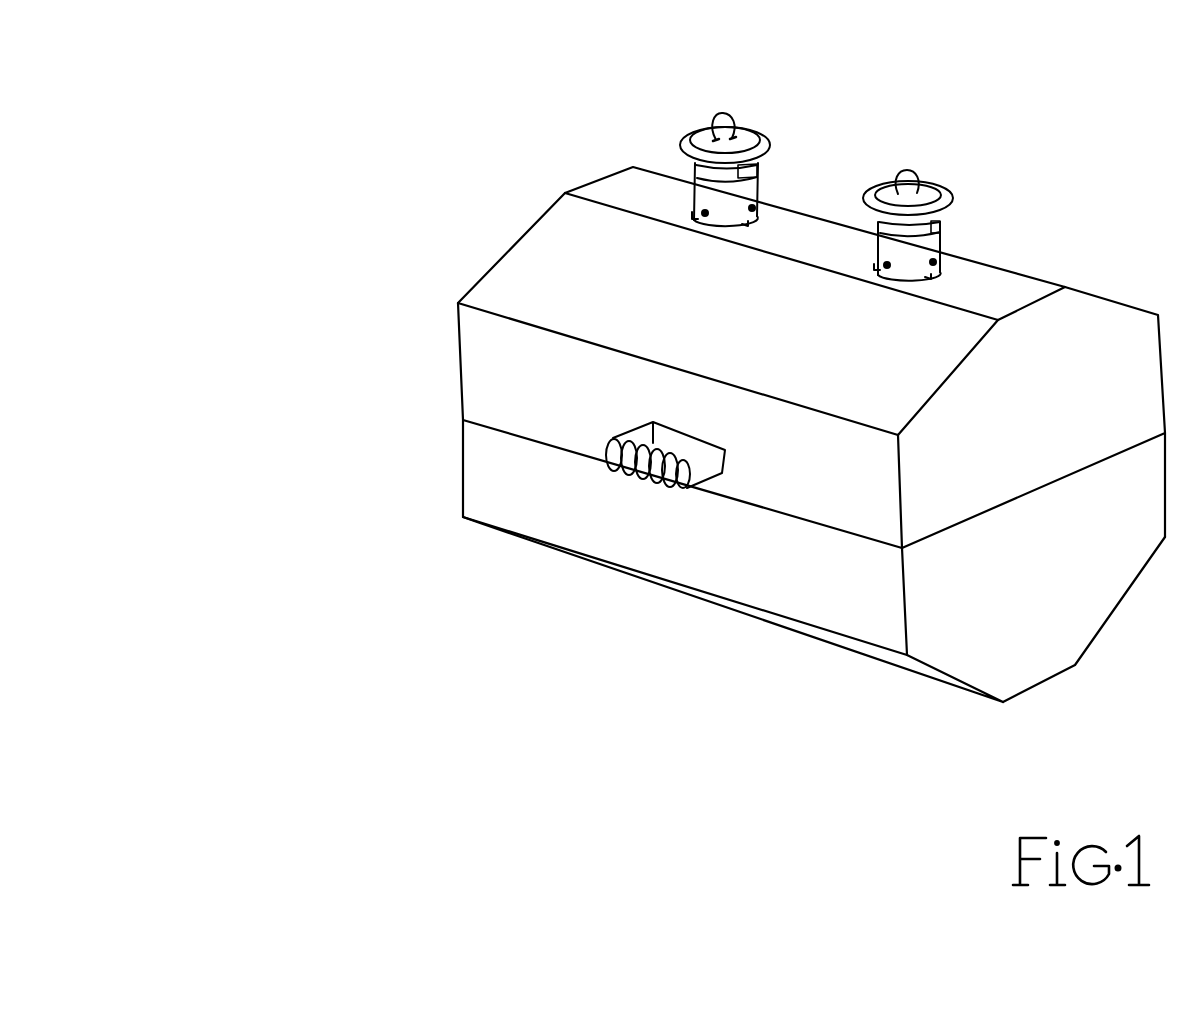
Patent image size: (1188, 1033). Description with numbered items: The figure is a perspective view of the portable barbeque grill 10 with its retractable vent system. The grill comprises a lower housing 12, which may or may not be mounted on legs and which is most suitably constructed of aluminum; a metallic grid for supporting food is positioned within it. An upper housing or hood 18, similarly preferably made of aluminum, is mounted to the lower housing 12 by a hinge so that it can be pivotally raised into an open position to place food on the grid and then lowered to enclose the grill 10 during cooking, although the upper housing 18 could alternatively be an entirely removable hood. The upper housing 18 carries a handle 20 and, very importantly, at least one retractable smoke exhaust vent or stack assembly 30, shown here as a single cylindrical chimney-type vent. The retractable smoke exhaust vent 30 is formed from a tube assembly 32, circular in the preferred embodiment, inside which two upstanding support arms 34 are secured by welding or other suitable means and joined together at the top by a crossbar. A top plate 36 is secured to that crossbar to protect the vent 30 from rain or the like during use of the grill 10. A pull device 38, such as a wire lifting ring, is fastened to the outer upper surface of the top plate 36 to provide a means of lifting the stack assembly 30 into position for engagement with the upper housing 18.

The portable barbeque grill 10 is at (361, 92).
The lower housing 12 is at (1058, 592).
The upper housing 18 is at (1070, 416).
The handle 20 is at (605, 436).
The retractable smoke exhaust vent 30 is at (625, 107).
The tube assembly 32 is at (748, 185).
The upstanding support arms 34 is at (748, 167).
The top plate 36 is at (745, 126).
The pull device 38 is at (718, 118).